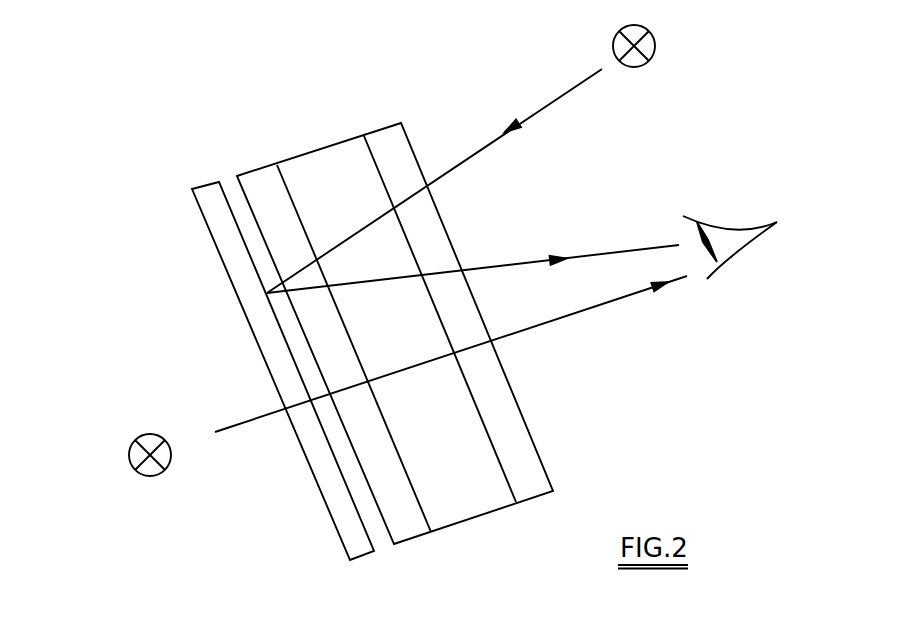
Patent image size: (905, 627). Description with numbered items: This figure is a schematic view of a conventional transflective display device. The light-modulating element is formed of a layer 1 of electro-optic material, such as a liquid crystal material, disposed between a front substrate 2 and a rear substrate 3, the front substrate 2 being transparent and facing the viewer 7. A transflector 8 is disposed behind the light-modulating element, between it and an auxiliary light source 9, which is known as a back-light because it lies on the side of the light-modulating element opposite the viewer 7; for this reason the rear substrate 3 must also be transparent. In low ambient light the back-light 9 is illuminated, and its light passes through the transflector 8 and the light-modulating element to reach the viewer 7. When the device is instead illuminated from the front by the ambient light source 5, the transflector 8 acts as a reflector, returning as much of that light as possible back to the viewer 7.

The layer of electro-optic material 1 is at (337, 160).
The front substrate 2 is at (545, 472).
The rear substrate 3 is at (267, 185).
The ambient light source 5 is at (473, 150).
The viewer 7 is at (763, 272).
The transflector 8 is at (210, 238).
The auxiliary light source 9 is at (387, 376).